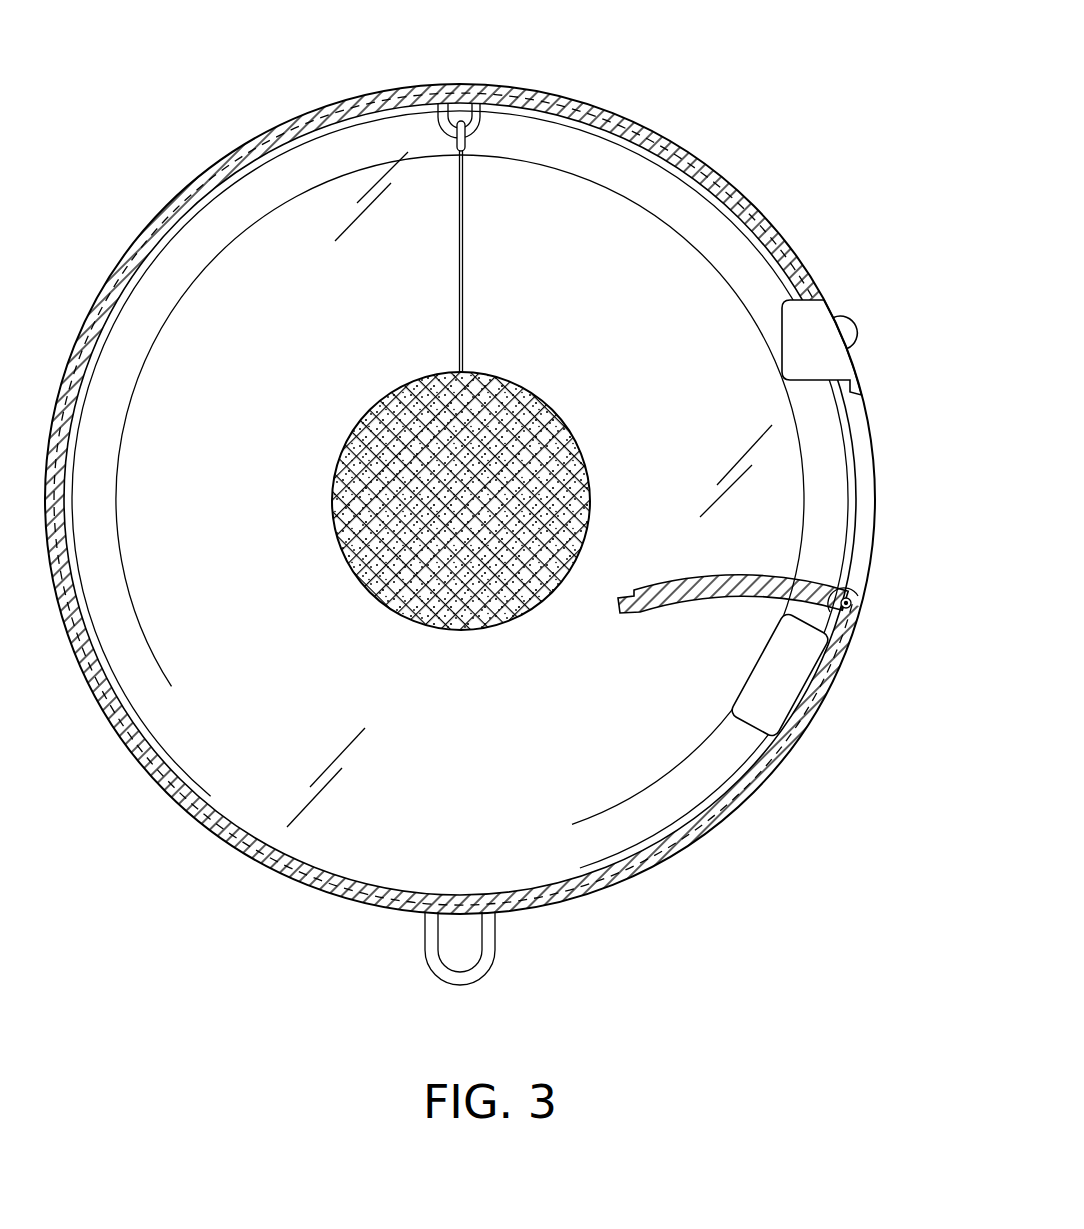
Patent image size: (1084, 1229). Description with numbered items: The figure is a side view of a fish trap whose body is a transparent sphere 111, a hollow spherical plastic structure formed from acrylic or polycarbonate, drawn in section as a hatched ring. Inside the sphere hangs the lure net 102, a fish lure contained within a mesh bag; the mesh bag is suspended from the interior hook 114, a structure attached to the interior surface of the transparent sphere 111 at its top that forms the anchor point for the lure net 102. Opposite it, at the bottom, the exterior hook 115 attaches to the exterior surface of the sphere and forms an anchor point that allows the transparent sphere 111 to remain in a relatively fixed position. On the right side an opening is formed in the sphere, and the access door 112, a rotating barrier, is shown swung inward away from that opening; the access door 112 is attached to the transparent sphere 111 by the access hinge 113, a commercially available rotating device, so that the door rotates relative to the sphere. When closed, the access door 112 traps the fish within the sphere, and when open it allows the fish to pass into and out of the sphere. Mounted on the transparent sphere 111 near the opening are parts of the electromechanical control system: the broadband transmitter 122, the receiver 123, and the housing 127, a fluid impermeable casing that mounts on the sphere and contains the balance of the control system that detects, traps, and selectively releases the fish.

The lure net 102 is at (387, 402).
The transparent sphere 111 is at (622, 130).
The access door 112 is at (733, 583).
The access hinge 113 is at (853, 603).
The interior hook 114 is at (482, 125).
The exterior hook 115 is at (483, 963).
The broadband transmitter 122 is at (807, 318).
The receiver 123 is at (855, 333).
The housing 127 is at (783, 673).